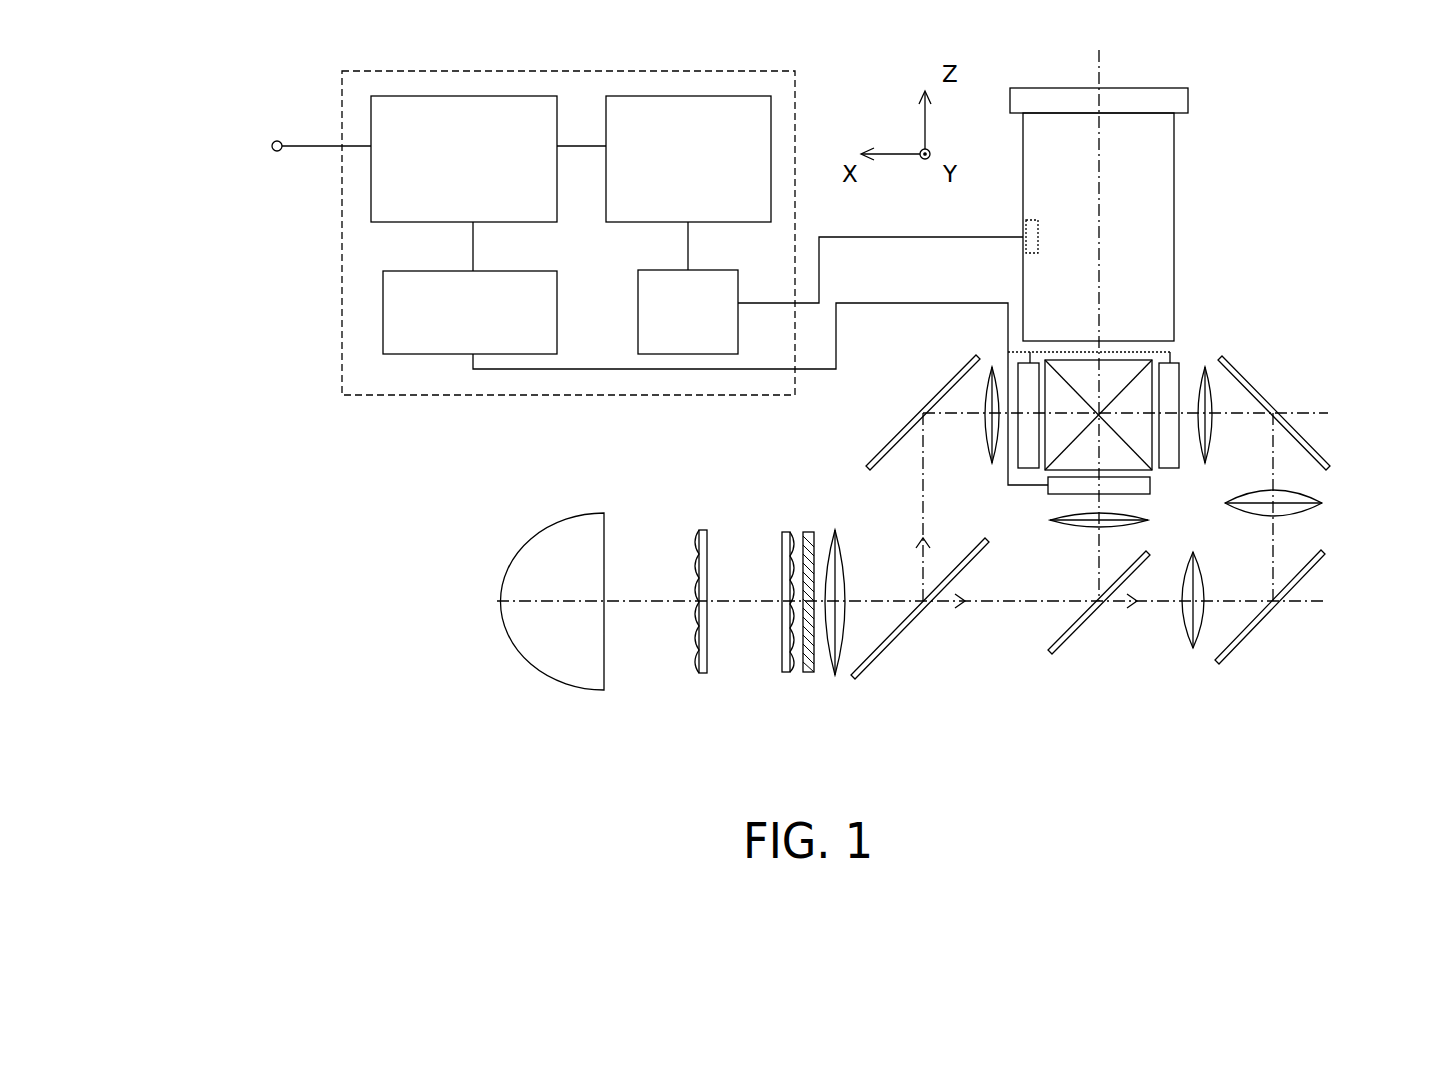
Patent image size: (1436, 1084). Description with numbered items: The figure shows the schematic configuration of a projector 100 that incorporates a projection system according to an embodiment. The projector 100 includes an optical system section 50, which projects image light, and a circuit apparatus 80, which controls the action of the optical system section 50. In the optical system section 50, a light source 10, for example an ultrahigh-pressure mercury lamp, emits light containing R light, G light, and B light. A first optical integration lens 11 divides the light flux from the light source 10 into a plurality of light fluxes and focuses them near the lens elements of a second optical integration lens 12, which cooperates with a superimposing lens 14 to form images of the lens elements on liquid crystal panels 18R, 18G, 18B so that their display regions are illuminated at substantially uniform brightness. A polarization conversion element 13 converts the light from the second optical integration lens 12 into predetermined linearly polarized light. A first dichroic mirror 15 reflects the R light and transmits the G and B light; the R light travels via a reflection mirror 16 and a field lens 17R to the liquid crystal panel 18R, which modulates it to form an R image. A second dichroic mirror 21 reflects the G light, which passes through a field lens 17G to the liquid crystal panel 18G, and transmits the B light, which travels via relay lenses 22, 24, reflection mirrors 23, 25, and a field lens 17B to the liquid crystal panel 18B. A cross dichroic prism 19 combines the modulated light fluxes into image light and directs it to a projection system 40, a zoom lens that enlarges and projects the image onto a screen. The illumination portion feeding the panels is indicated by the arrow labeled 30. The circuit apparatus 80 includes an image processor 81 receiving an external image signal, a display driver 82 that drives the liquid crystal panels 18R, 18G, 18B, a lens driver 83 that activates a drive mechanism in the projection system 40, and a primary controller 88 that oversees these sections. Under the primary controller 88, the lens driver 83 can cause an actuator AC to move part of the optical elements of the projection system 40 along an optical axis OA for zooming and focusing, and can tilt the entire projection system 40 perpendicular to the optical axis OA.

The light source 10 is at (551, 663).
The first optical integration lens 11 is at (699, 673).
The second optical integration lens 12 is at (785, 672).
The polarization conversion element 13 is at (808, 532).
The superimposing lens 14 is at (838, 566).
The first dichroic mirror 15 is at (880, 645).
The reflection mirror 16 is at (870, 462).
The field lens 17R is at (990, 405).
The field lens 17G is at (1148, 520).
The field lens 17B is at (1205, 395).
The liquid crystal panel 18R is at (1027, 478).
The liquid crystal panel 18G is at (1150, 485).
The liquid crystal panel 18B is at (1172, 360).
The cross dichroic prism 19 is at (1133, 365).
The second dichroic mirror 21 is at (1060, 650).
The relay lens 22 is at (1193, 648).
The reflection mirror 23 is at (1310, 572).
The relay lens 24 is at (1322, 503).
The reflection mirror 25 is at (1295, 435).
The illumination optical system 30 is at (724, 486).
The projection system 40 is at (1174, 160).
The optical system section 50 is at (1310, 208).
The circuit apparatus 80 is at (342, 237).
The image processor 81 is at (455, 96).
The display driver 82 is at (383, 318).
The lens driver 83 is at (638, 318).
The primary controller 88 is at (737, 106).
The projector 100 is at (1381, 36).
The actuator AC is at (1030, 218).
The optical axis OA is at (1099, 213).